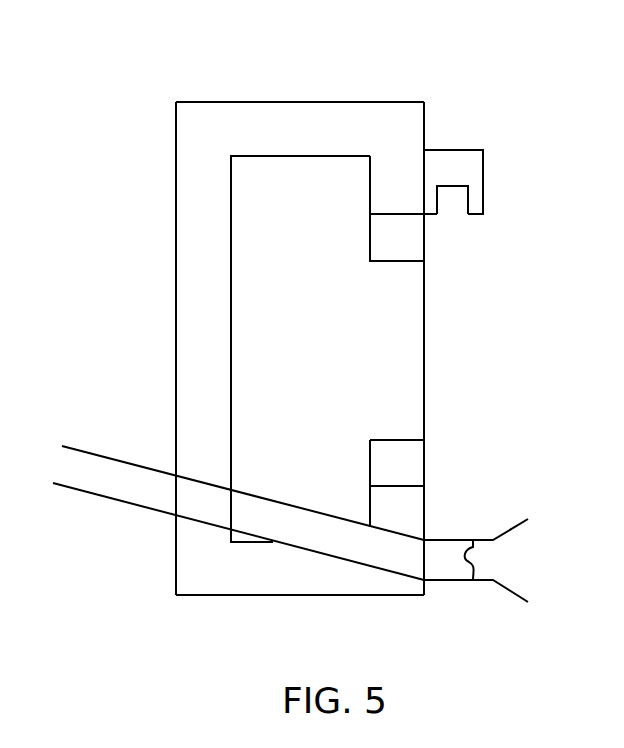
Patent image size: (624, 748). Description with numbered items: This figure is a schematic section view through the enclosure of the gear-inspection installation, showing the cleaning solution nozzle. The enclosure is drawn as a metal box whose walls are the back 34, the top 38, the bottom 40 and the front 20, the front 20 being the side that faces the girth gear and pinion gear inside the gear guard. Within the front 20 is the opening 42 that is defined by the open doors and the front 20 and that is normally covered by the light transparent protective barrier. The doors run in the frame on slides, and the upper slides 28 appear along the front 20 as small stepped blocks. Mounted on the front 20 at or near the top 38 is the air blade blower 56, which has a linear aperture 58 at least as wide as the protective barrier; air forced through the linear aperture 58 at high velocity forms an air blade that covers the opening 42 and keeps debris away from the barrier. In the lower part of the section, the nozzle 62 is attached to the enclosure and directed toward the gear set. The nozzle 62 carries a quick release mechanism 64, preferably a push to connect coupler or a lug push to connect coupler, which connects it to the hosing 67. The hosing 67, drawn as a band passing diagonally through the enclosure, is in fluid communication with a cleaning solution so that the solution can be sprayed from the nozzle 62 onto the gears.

The front 20 is at (407, 152).
The upper slides 28 is at (398, 243).
The back 34 is at (188, 319).
The top 38 is at (251, 123).
The bottom 40 is at (283, 572).
The opening 42 is at (407, 356).
The air blade blower 56 is at (470, 162).
The linear aperture 58 is at (450, 203).
The nozzle 62 is at (522, 540).
The quick release mechanism 64 is at (472, 565).
The hosing 67 is at (257, 515).